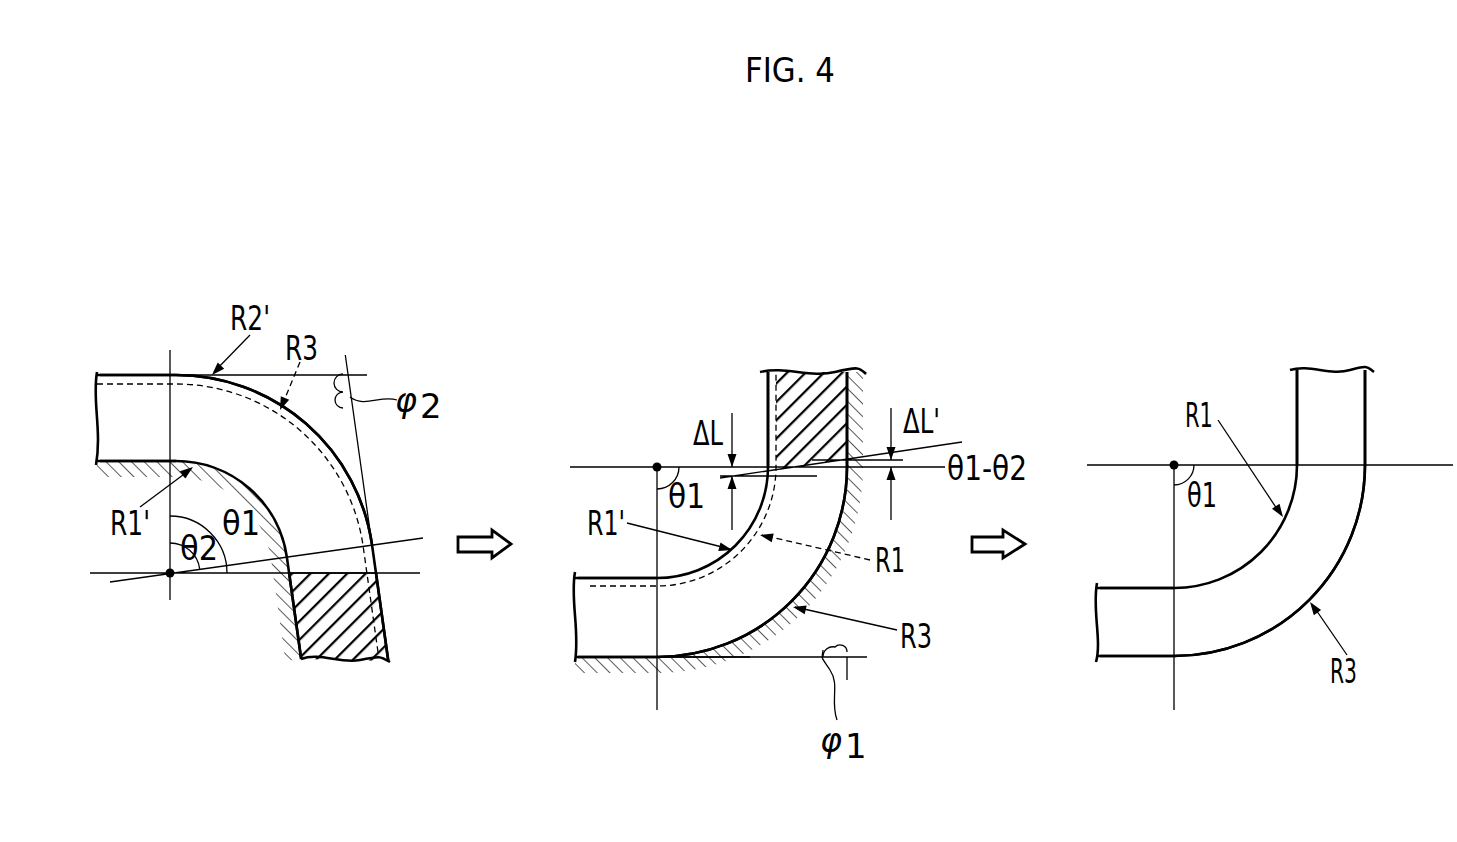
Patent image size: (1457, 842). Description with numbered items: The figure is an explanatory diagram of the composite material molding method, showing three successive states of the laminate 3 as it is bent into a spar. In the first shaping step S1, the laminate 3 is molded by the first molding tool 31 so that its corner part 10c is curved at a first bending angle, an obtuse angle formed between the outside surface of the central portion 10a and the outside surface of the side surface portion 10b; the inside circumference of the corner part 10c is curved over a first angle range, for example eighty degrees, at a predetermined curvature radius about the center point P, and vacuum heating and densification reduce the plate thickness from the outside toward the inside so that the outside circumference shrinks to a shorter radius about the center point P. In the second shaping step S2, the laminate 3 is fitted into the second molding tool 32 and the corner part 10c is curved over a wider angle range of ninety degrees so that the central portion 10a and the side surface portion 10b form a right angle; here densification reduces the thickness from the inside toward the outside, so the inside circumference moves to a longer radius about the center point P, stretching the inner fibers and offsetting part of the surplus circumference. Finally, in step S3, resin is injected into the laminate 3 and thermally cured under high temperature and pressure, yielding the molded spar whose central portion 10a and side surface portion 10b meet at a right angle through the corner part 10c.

The laminate 3 is at (99, 370).
The central portion 10a is at (133, 383).
The side surface portion 10b is at (387, 622).
The corner part 10c is at (322, 472).
The first molding tool 31 is at (270, 668).
The second molding tool 32 is at (717, 680).
The first shaping step S1 is at (248, 292).
The second shaping step S2 is at (715, 325).
The resin injection and thermal curing step S3 is at (1230, 318).
The center point P is at (170, 575).